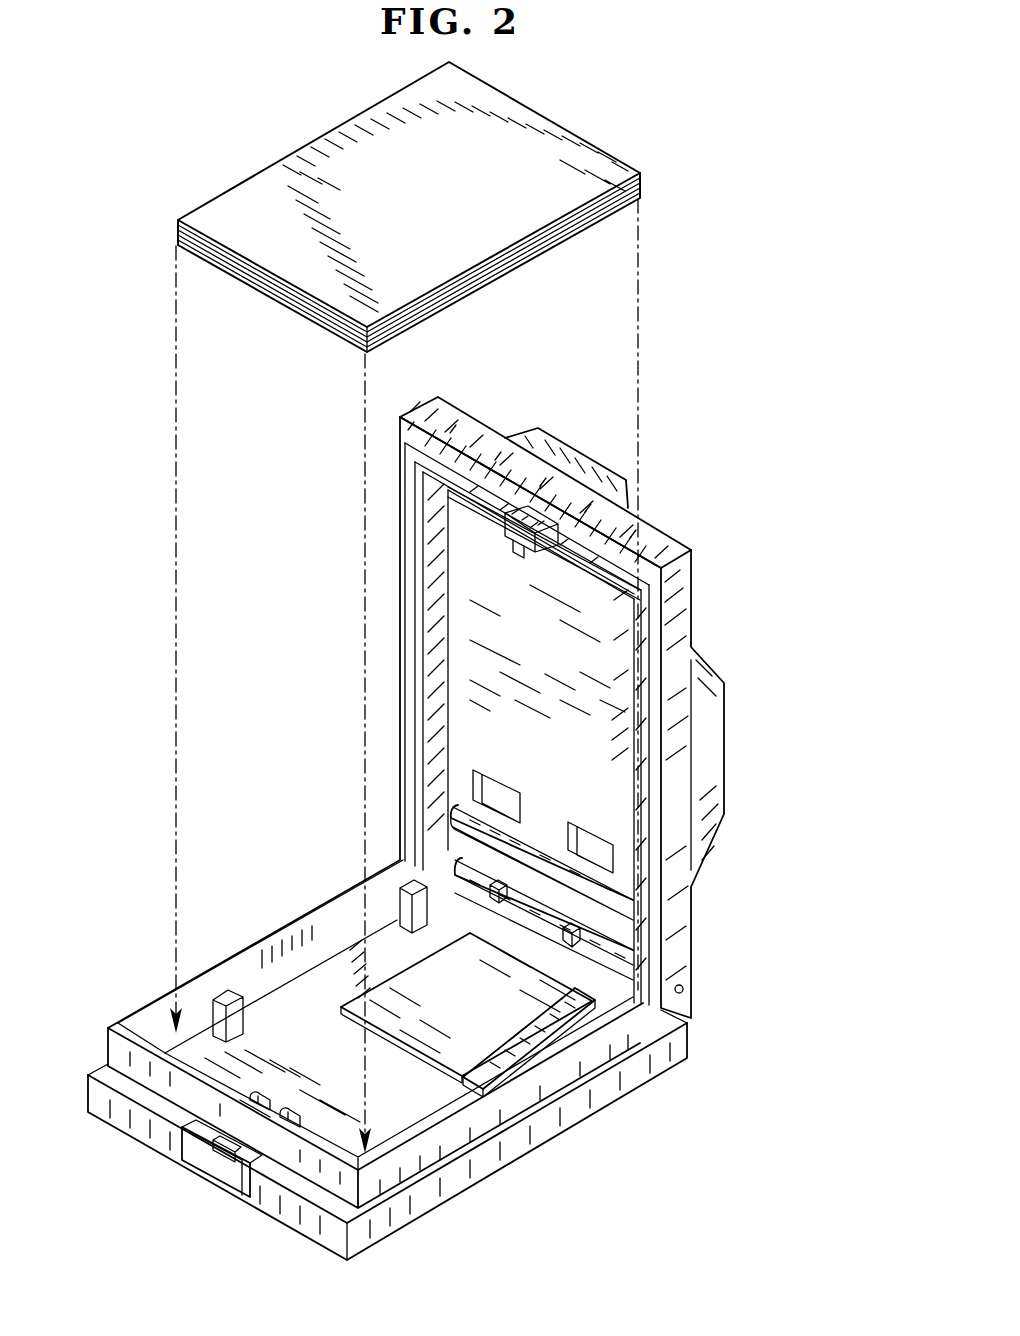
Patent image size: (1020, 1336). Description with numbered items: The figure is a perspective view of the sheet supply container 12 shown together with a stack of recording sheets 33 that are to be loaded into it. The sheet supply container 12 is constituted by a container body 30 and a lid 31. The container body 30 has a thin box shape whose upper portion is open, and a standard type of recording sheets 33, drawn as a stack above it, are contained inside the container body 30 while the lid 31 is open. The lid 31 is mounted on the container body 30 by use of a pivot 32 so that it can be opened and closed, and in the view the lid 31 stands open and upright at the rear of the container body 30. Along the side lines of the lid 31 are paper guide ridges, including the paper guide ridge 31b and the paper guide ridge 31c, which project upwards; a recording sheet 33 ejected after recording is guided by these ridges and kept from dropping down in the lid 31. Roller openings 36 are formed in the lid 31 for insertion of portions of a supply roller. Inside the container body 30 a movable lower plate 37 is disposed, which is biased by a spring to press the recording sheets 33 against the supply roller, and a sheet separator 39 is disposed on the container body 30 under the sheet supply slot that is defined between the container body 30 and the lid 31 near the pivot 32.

The sheet supply container 12 is at (487, 1177).
The container body 30 is at (700, 1050).
The lid 31 is at (686, 588).
The paper guide ridge 31b is at (716, 755).
The paper guide ridge 31c is at (553, 445).
The pivot 32 is at (684, 990).
The recording sheets 33 is at (568, 126).
The roller openings 36 is at (498, 792).
The movable lower plate 37 is at (500, 1028).
The sheet separator 39 is at (525, 913).